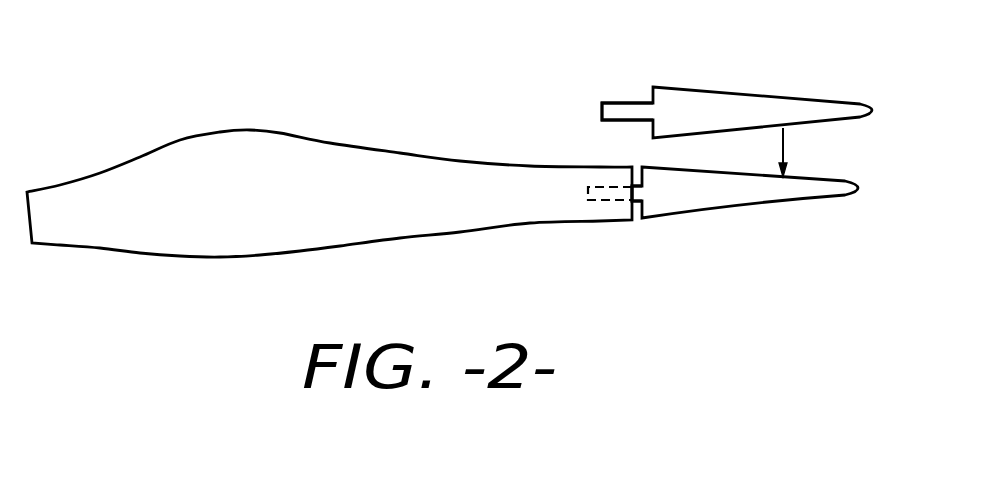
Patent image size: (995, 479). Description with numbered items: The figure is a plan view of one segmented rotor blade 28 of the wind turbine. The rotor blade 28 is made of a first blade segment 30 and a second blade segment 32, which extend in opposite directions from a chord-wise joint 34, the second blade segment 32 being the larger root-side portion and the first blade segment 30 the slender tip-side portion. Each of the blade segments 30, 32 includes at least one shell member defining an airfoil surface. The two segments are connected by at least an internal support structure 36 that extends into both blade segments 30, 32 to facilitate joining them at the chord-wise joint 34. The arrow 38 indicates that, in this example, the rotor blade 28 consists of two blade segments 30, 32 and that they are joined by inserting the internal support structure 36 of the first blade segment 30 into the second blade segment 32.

The rotor blade 28 is at (133, 75).
The first blade segment 30 is at (723, 100).
The second blade segment 32 is at (138, 253).
The chord-wise joint 34 is at (637, 212).
The internal support structure 36 is at (628, 102).
The arrow 38 is at (787, 135).